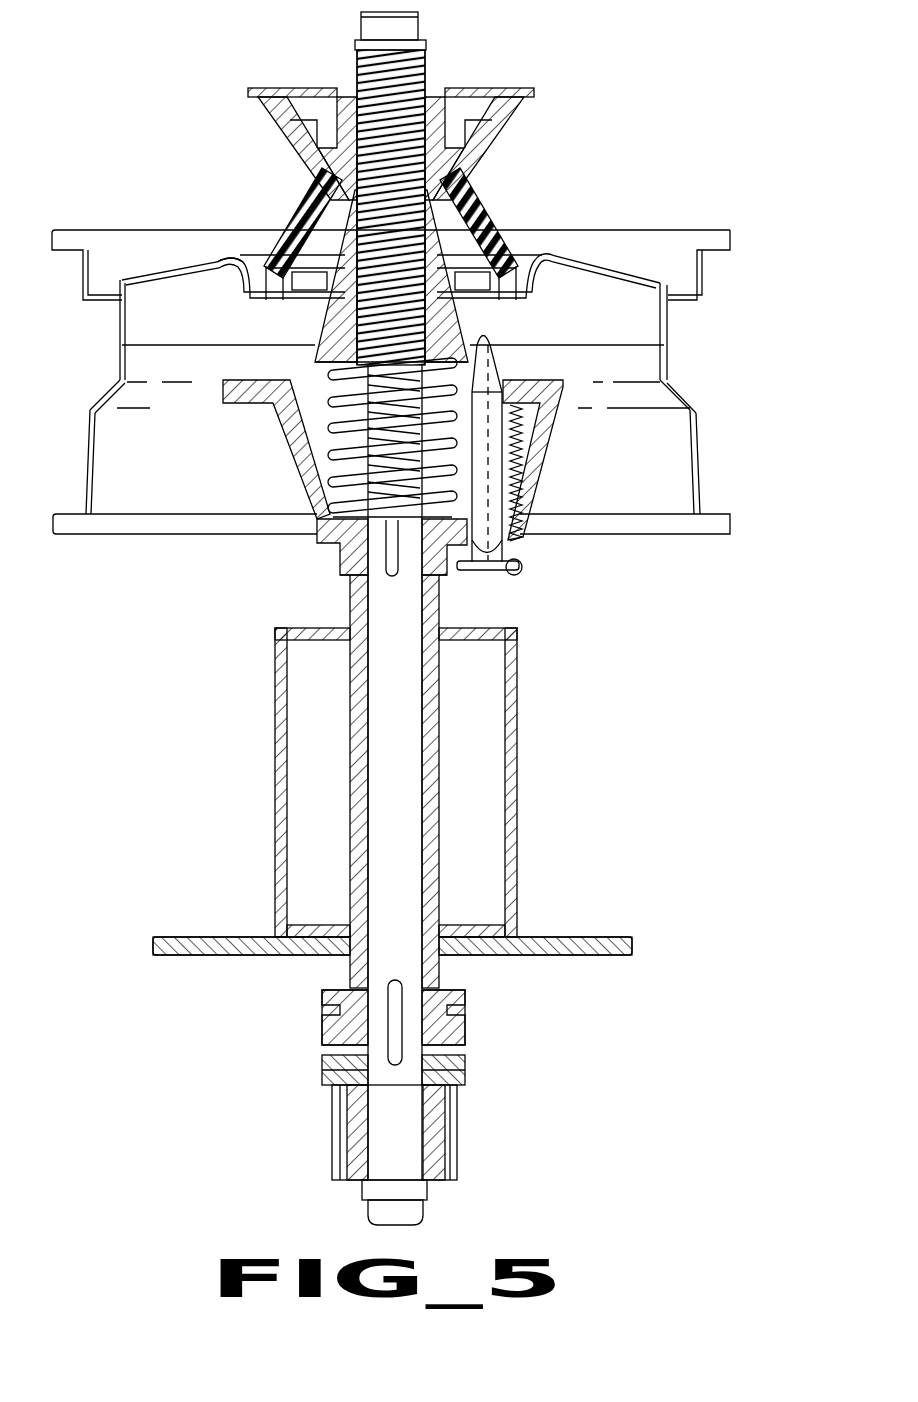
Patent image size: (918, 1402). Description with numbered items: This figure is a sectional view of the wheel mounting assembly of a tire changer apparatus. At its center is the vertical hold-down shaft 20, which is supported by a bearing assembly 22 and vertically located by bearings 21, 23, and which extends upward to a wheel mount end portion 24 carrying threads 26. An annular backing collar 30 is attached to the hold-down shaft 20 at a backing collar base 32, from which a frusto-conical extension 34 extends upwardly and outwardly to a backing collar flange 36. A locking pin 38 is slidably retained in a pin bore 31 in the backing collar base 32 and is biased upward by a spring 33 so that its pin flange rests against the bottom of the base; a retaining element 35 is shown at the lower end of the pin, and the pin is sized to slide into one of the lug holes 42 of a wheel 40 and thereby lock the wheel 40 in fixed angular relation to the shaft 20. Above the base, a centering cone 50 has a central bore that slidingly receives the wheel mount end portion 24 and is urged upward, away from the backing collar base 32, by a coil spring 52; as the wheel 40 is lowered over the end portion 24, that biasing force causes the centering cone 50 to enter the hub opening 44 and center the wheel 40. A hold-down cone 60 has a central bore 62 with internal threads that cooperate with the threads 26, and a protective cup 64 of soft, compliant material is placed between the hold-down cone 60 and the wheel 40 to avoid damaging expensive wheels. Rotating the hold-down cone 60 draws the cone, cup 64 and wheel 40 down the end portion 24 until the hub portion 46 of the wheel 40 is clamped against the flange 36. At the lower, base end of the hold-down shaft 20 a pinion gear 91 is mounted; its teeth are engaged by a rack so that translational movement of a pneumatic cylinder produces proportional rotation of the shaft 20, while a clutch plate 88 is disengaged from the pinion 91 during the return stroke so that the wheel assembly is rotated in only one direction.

The hold-down shaft 20 is at (410, 832).
The bearing 21 is at (342, 578).
The bearing assembly 22 is at (430, 768).
The bearing 23 is at (362, 987).
The wheel mount end portion 24 is at (425, 58).
The threads 26 is at (430, 85).
The backing collar 30 is at (548, 495).
The pin bore 31 is at (474, 576).
The backing collar base 32 is at (333, 552).
The spring 33 is at (540, 453).
The frusto-conical extension 34 is at (285, 440).
The hook clip 35 is at (492, 580).
The backing collar flange 36 is at (222, 393).
The locking pin 38 is at (492, 423).
The wheel 40 is at (678, 318).
The lug holes 42 is at (490, 310).
The hub opening 44 is at (302, 230).
The hub portion 46 is at (217, 266).
The centering cone 50 is at (320, 332).
The coil spring 52 is at (330, 476).
The hold-down cone 60 is at (488, 128).
The central bore 62 is at (365, 85).
The protective cup 64 is at (483, 200).
The clutch plate 88 is at (465, 1027).
The pinion gear 91 is at (435, 1138).